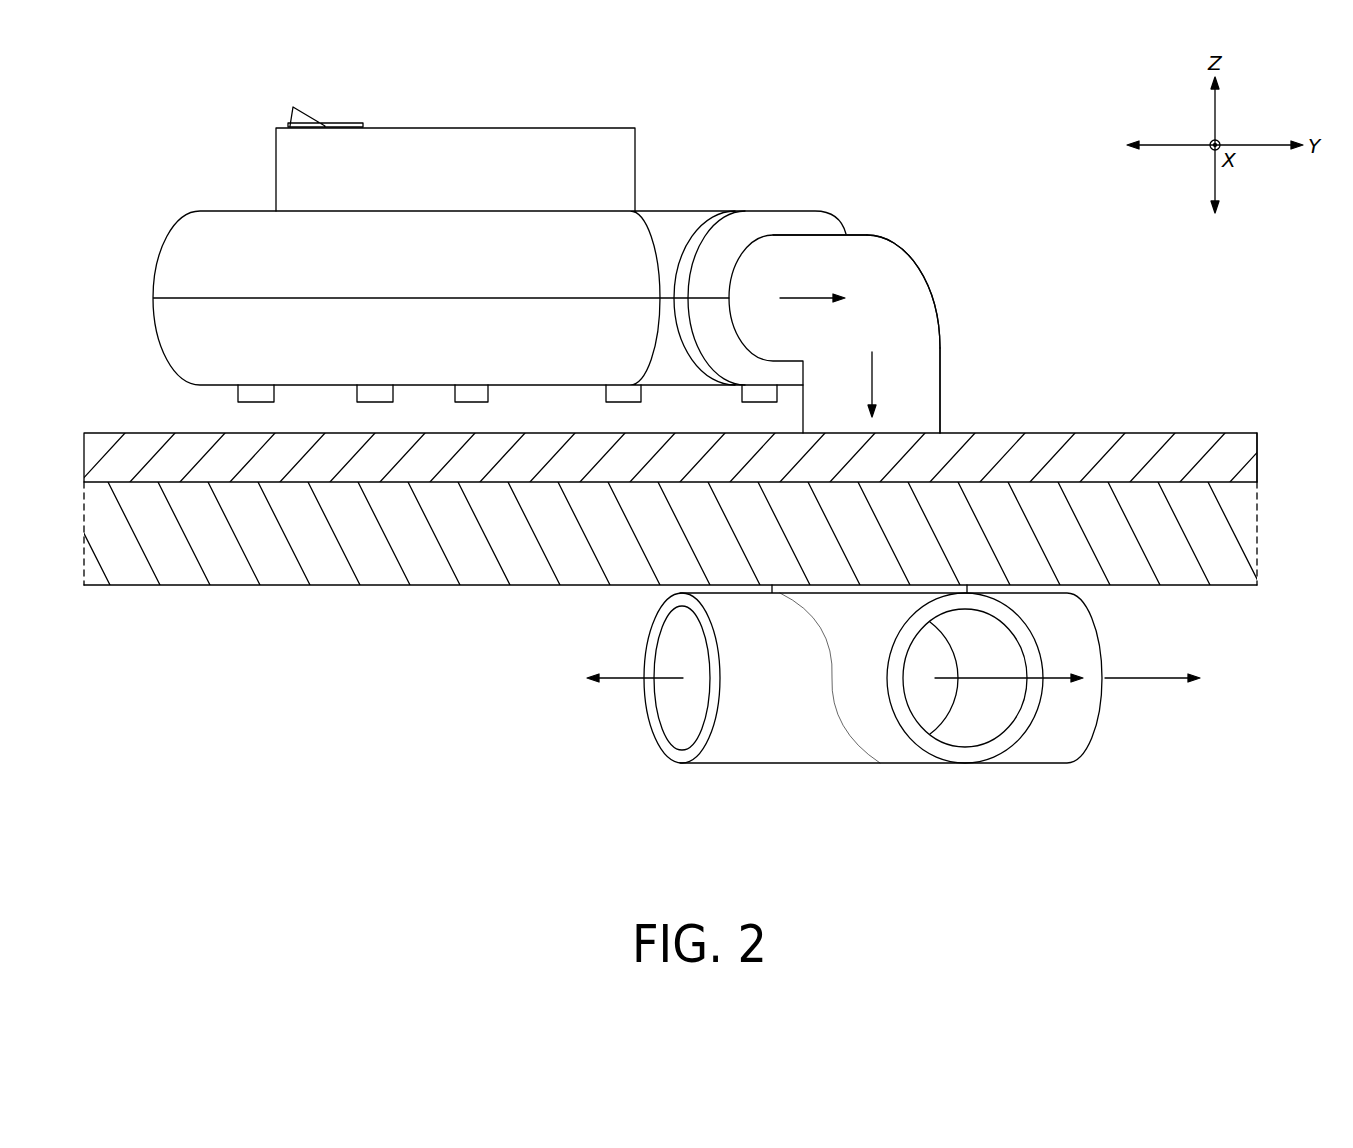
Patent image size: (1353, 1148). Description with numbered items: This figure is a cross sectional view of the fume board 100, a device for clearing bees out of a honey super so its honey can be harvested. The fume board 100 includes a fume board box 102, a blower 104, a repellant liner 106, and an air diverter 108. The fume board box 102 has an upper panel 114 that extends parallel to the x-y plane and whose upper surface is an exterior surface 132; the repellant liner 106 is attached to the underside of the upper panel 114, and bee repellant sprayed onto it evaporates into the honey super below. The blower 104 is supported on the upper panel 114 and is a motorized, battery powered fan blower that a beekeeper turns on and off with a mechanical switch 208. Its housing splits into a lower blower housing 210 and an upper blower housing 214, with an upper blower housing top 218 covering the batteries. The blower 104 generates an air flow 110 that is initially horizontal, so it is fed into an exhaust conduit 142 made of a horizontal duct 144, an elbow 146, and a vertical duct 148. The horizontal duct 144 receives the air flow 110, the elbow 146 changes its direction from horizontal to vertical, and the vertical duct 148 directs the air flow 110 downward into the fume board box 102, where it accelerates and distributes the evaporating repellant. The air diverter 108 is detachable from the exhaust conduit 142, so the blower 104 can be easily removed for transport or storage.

The fume board 100 is at (935, 113).
The fume board box 102 is at (1120, 433).
The blower 104 is at (735, 168).
The repellant liner 106 is at (193, 587).
The air diverter 108 is at (740, 758).
The air flow 110 is at (796, 297).
The upper panel 114 is at (1042, 446).
The exterior surface 132 is at (1242, 433).
The exhaust conduit 142 is at (887, 257).
The horizontal duct 144 is at (872, 243).
The elbow 146 is at (907, 285).
The vertical duct 148 is at (928, 328).
The mechanical switch 208 is at (322, 110).
The lower blower housing 210 is at (192, 365).
The upper blower housing 214 is at (192, 230).
The upper blower housing top 218 is at (555, 128).